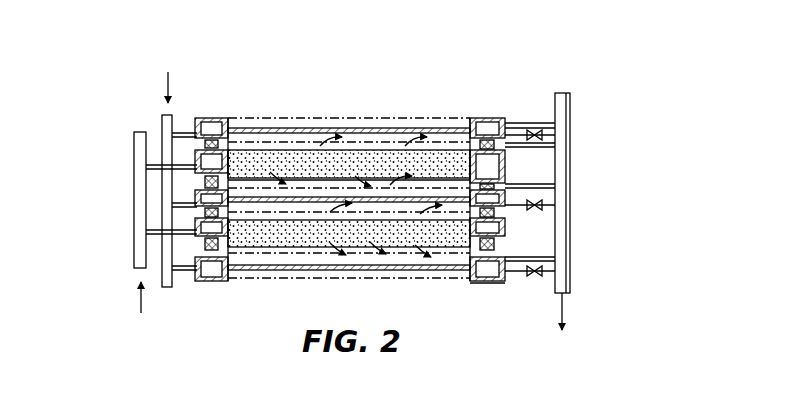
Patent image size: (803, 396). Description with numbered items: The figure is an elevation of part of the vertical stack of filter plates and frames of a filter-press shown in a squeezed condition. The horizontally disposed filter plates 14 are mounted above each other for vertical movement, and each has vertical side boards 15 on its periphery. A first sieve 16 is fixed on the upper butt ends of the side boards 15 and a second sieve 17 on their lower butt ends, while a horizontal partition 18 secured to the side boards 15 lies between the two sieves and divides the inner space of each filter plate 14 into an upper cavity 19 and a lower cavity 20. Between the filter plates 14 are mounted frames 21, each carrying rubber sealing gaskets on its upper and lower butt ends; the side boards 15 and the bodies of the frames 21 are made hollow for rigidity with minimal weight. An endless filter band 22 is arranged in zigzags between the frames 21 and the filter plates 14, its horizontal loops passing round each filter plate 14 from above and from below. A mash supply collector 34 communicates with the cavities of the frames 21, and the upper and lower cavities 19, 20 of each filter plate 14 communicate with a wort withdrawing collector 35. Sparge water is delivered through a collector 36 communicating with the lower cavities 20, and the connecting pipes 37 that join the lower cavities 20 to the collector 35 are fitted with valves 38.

The filter plate 14 is at (202, 115).
The vertical side board 15 is at (230, 120).
The first sieve 16 is at (290, 118).
The second sieve 17 is at (385, 142).
The horizontal partition 18 is at (413, 130).
The upper cavity 19 is at (343, 118).
The lower cavity 20 is at (457, 138).
The frame 21 is at (238, 248).
The endless filter band 22 is at (510, 181).
The mash supply collector 34 is at (134, 172).
The wort withdrawing collector 35 is at (571, 242).
The sparge water collector 36 is at (162, 125).
The connecting pipe 37 is at (510, 280).
The valve 38 is at (534, 278).